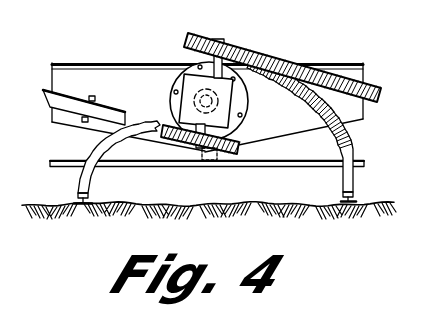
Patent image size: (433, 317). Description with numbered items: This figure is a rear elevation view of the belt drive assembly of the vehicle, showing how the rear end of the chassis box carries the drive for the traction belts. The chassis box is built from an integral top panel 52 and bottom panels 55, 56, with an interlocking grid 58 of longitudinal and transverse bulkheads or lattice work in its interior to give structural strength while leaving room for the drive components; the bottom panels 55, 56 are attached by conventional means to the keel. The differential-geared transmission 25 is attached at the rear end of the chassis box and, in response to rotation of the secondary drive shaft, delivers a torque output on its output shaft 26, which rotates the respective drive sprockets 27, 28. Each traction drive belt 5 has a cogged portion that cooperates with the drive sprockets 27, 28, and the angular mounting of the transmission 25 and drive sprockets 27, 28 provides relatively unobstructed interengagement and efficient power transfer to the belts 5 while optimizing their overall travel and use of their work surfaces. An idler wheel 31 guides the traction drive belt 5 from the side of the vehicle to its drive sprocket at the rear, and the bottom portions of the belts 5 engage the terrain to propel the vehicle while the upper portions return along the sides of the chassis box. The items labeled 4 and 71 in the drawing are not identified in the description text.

The frame 4 is at (364, 72).
The traction drive belt 5 is at (78, 181).
The differential-geared transmission 25 is at (246, 128).
The output shaft 26 is at (177, 147).
The drive sprocket 27 is at (249, 43).
The drive sprocket 28 is at (213, 158).
The idler wheel 31 is at (107, 107).
The top panel 52 is at (103, 67).
The bottom panel 55 is at (270, 140).
The bottom panel 56 is at (73, 126).
The interlocking grid 58 is at (63, 79).
The lower rail 71 is at (299, 167).